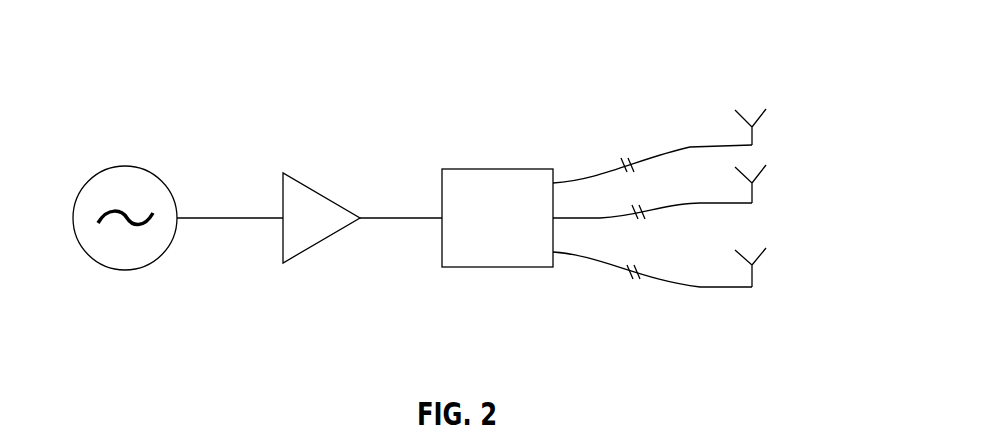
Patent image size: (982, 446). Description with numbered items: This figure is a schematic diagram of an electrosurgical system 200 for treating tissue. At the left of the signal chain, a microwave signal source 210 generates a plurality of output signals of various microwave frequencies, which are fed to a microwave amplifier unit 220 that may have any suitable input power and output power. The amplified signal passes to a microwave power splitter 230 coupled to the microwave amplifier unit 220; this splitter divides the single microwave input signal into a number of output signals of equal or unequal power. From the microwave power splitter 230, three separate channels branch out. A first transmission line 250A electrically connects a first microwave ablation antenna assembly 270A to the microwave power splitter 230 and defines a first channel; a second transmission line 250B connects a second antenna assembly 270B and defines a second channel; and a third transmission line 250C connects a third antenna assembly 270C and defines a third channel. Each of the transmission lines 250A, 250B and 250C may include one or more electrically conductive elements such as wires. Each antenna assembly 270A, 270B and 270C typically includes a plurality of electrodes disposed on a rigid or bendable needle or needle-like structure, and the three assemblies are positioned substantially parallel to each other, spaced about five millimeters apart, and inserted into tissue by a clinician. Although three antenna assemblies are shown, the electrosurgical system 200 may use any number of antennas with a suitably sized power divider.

The electrosurgical system 200 is at (312, 38).
The microwave signal source 210 is at (122, 167).
The microwave amplifier unit 220 is at (283, 173).
The microwave power splitter 230 is at (497, 169).
The first transmission line 250A is at (690, 148).
The second transmission line 250B is at (722, 202).
The third transmission line 250C is at (728, 286).
The first microwave ablation antenna assembly 270A is at (757, 129).
The second microwave ablation antenna assembly 270B is at (757, 186).
The third microwave ablation antenna assembly 270C is at (757, 271).